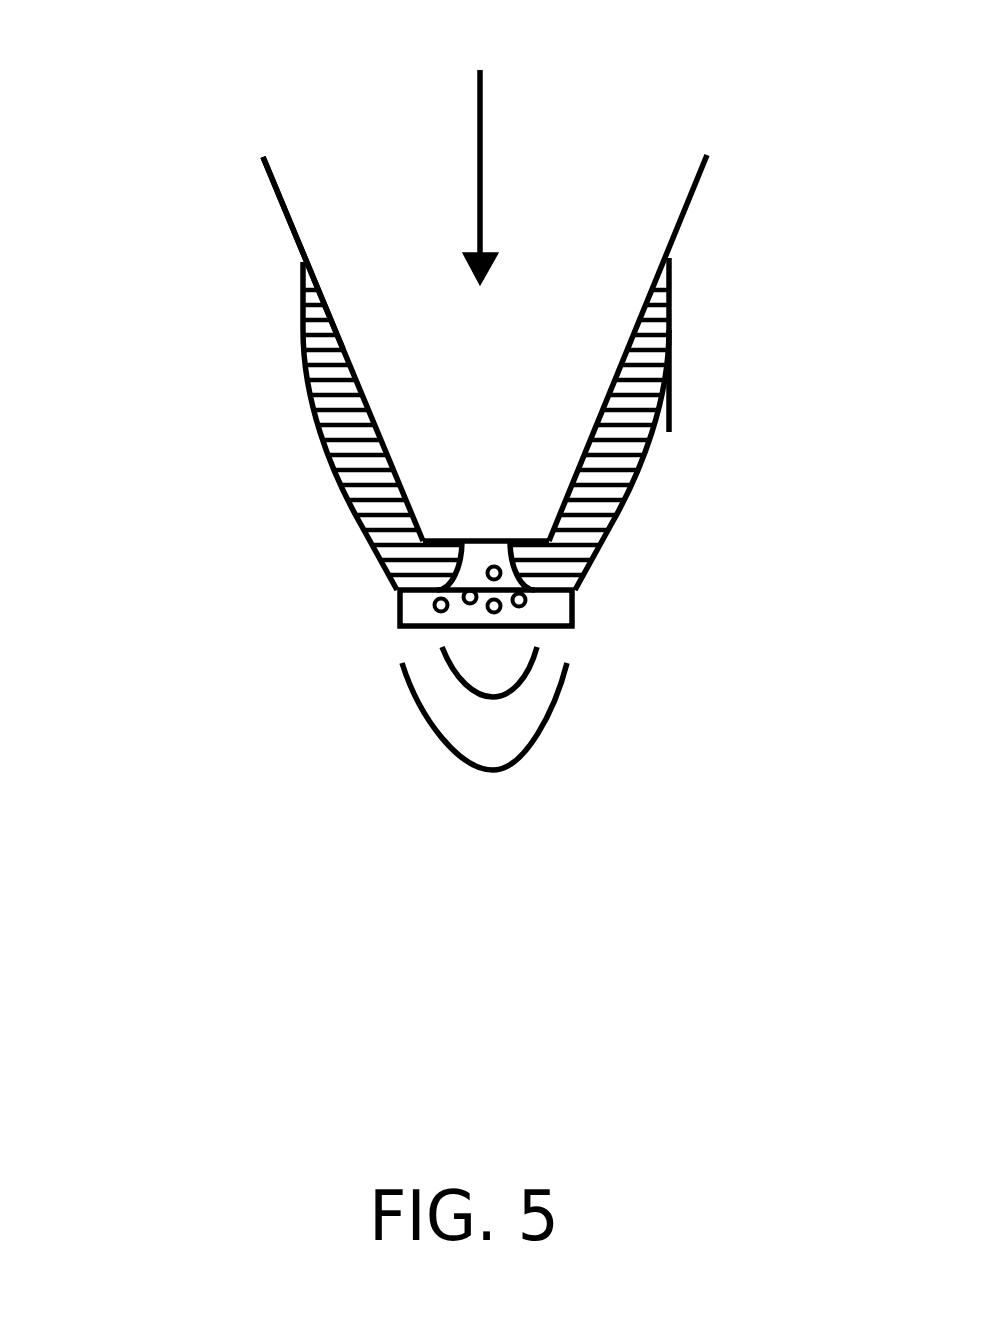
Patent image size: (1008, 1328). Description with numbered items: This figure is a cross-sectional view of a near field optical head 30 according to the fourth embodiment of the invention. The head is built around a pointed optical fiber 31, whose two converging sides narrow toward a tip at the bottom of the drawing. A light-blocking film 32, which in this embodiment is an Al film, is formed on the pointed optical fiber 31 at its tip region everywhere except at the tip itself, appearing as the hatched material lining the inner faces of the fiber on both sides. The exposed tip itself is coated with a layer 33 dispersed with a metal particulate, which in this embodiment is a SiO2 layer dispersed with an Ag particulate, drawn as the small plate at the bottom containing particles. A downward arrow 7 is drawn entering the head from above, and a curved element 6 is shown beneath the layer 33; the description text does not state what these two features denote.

The light beam 7 is at (480, 145).
The near field optical head 30 is at (864, 131).
The pointed optical fiber 31 is at (332, 217).
The light-blocking film 32 is at (317, 400).
The layer dispersed with a metal particulate 33 is at (543, 622).
The lens 6 is at (447, 745).